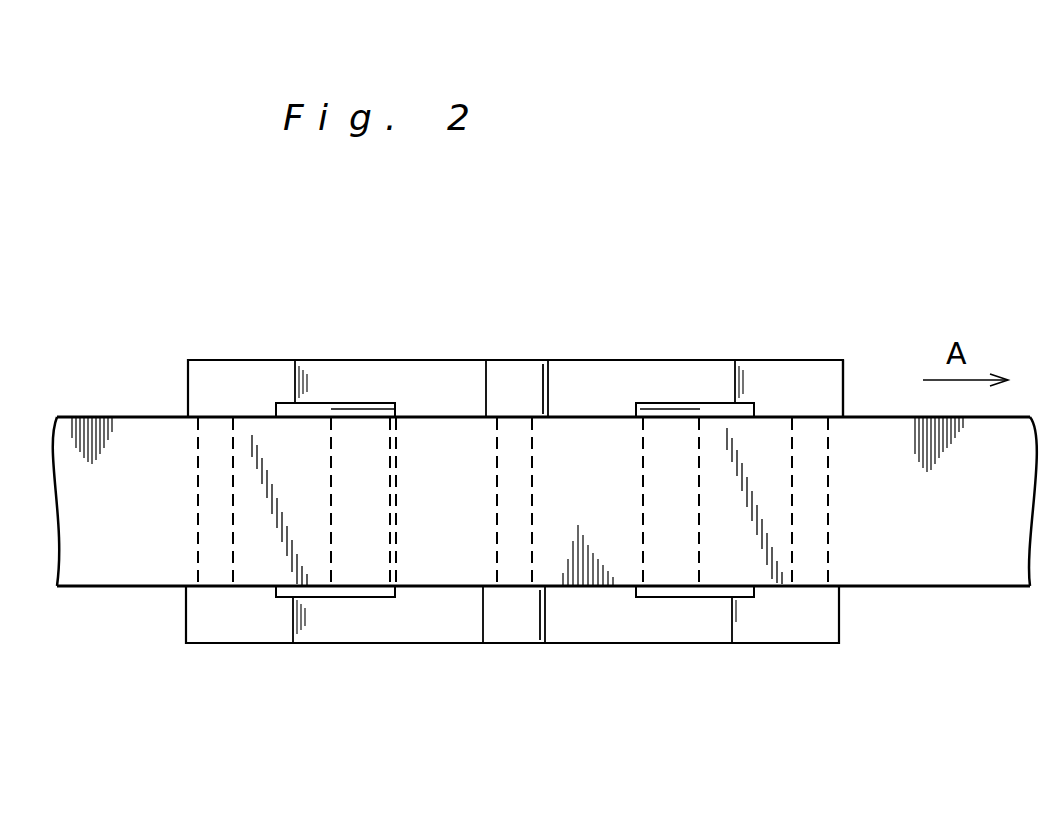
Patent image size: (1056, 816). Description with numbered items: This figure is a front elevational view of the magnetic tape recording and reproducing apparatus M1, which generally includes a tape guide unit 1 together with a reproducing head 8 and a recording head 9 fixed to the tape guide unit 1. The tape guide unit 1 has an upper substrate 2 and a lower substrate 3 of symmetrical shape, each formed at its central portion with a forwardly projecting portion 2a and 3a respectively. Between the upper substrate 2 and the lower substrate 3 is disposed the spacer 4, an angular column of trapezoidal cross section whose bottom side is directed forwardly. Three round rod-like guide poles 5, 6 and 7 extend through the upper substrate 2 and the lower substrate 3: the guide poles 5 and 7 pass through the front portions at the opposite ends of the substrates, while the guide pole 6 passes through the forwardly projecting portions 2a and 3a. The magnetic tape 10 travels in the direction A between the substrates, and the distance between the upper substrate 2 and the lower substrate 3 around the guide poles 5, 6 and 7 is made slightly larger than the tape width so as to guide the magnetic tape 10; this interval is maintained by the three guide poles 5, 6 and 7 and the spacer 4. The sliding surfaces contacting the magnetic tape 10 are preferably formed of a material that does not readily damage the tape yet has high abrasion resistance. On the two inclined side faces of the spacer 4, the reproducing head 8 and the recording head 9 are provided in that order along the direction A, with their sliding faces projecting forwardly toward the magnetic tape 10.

The magnetic tape recording and reproducing apparatus M1 is at (692, 262).
The tape guide unit 1 is at (702, 356).
The upper substrate 2 is at (612, 360).
The forwardly projecting portion 2a is at (523, 360).
The lower substrate 3 is at (422, 645).
The forwardly projecting portion 3a is at (516, 632).
The spacer 4 is at (414, 497).
The guide pole 5 is at (197, 467).
The guide pole 6 is at (497, 450).
The guide pole 7 is at (829, 466).
The reproducing head 8 is at (330, 543).
The recording head 9 is at (698, 530).
The magnetic tape 10 is at (937, 588).